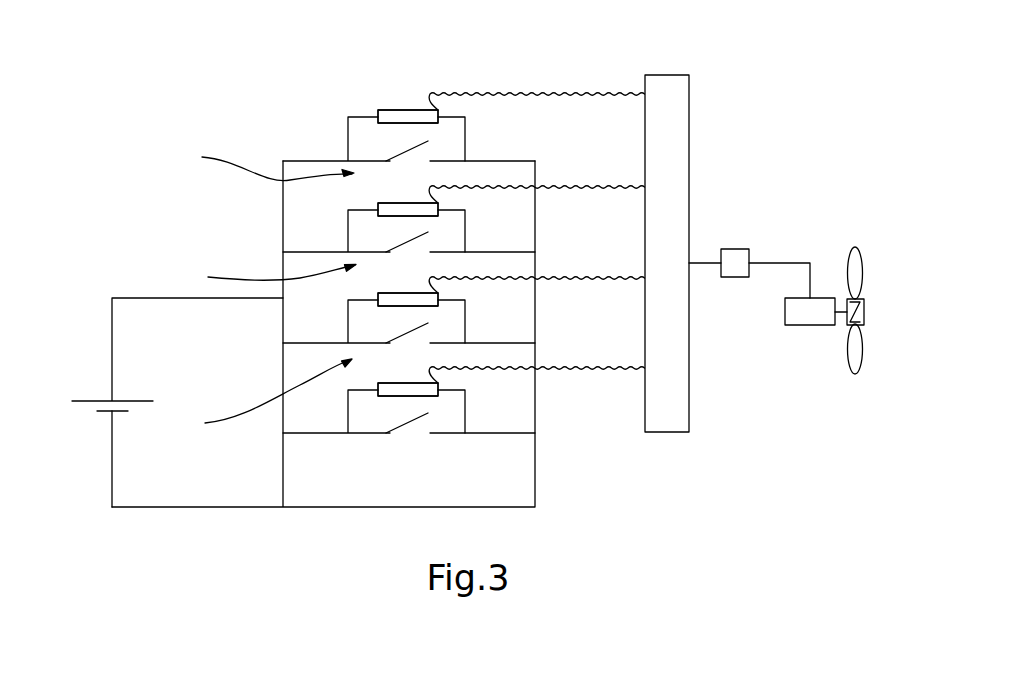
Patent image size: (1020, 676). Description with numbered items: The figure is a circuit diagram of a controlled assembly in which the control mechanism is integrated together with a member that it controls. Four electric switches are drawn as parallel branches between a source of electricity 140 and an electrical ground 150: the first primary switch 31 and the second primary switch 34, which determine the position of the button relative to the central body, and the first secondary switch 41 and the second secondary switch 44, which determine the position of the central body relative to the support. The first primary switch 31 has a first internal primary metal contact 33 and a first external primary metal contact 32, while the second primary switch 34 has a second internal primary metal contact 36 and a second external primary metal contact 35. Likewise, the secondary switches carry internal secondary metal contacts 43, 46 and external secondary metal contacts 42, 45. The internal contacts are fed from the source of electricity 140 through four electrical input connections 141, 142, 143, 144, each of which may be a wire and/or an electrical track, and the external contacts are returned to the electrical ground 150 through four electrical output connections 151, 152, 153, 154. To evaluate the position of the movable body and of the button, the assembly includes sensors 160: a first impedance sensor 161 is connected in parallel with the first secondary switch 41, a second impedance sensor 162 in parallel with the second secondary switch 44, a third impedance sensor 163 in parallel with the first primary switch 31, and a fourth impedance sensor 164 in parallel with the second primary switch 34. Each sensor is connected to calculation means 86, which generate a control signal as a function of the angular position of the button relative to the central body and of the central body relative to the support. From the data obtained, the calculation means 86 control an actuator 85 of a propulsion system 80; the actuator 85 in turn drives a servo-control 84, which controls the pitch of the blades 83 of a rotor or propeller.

The first primary switch 31 is at (392, 452).
The first external primary metal contact 32 is at (446, 433).
The first internal primary metal contact 33 is at (399, 417).
The second primary switch 34 is at (261, 397).
The second external primary metal contact 35 is at (446, 343).
The second internal primary metal contact 36 is at (399, 327).
The first secondary switch 41 is at (266, 278).
The external secondary metal contact 42 is at (446, 252).
The internal secondary metal contact 43 is at (399, 236).
The second secondary switch 44 is at (262, 164).
The external secondary metal contact 45 is at (446, 161).
The internal secondary metal contact 46 is at (399, 145).
The propulsion system 80 is at (824, 400).
The blades 83 is at (876, 375).
The servo-control 84 is at (812, 325).
The actuator 85 is at (735, 249).
The calculation means 86 is at (668, 432).
The source of electricity 140 is at (92, 400).
The electrical input connection 141 is at (320, 433).
The electrical input connection 142 is at (312, 343).
The electrical input connection 143 is at (312, 252).
The electrical input connection 144 is at (311, 161).
The electrical ground 150 is at (102, 413).
The electrical output connection 151 is at (505, 433).
The electrical output connection 152 is at (516, 343).
The electrical output connection 153 is at (516, 252).
The electrical output connection 154 is at (516, 161).
The sensor 160 is at (408, 253).
The first impedance sensor 161 is at (402, 203).
The second impedance sensor 162 is at (397, 110).
The third impedance sensor 163 is at (400, 383).
The fourth impedance sensor 164 is at (400, 293).